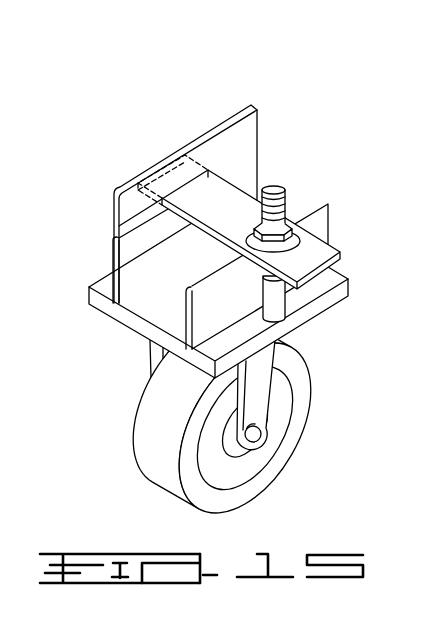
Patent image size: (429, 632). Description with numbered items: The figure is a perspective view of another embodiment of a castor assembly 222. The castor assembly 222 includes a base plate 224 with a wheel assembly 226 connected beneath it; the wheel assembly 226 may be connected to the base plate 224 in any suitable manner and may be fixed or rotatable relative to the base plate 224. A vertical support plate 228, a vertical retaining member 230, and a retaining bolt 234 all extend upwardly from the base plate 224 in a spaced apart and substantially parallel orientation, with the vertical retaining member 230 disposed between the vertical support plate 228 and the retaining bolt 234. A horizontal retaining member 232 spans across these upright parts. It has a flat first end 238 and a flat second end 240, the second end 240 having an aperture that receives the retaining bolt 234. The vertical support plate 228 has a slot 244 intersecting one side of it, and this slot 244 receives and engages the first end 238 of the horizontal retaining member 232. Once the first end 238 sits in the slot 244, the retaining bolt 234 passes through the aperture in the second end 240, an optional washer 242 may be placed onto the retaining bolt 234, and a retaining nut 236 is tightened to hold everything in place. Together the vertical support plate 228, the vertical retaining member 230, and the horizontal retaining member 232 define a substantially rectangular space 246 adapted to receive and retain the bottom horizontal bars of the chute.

The castor assembly 222 is at (133, 76).
The base plate 224 is at (148, 314).
The wheel assembly 226 is at (266, 400).
The vertical support plate 228 is at (255, 117).
The vertical retaining member 230 is at (182, 350).
The horizontal retaining member 232 is at (223, 197).
The retaining bolt 234 is at (274, 299).
The retaining nut 236 is at (289, 226).
The first end 238 is at (158, 162).
The second end 240 is at (327, 252).
The washer 242 is at (295, 224).
The slot 244 is at (118, 234).
The rectangular space 246 is at (150, 265).